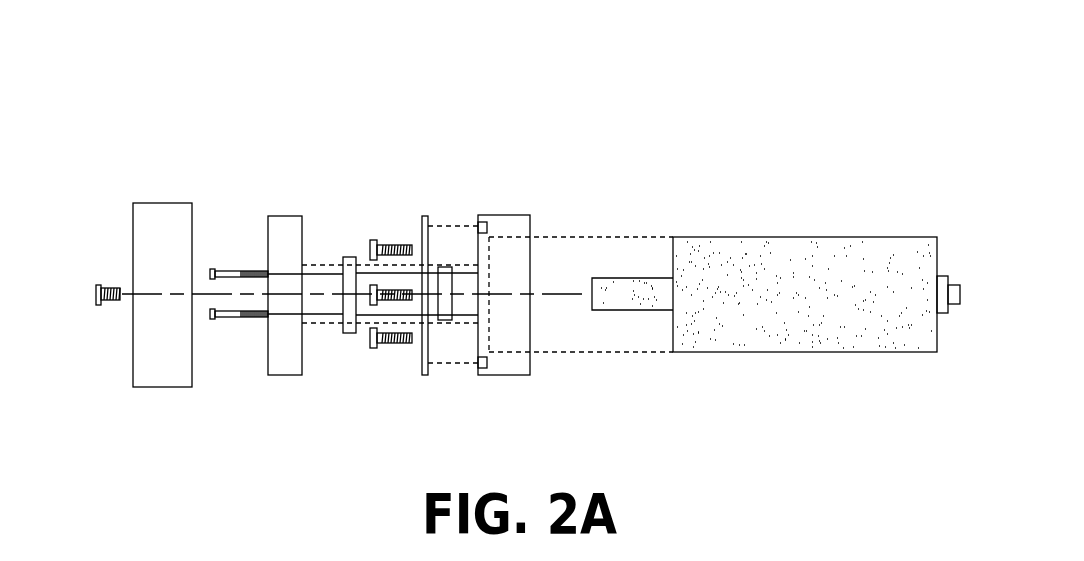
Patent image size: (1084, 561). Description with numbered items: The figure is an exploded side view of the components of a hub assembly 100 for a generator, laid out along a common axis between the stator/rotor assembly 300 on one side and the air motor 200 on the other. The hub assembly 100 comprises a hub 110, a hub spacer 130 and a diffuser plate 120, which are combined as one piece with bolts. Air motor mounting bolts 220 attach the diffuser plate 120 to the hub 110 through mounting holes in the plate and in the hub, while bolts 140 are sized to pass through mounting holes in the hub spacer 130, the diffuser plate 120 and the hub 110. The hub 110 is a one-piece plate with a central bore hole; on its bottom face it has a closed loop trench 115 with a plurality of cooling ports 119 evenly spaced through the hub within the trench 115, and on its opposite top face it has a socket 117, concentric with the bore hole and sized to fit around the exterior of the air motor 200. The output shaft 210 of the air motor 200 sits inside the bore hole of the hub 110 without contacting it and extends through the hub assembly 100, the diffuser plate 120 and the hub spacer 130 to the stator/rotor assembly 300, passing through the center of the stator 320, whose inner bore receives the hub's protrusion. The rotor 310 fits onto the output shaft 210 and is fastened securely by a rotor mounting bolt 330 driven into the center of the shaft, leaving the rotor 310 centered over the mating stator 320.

The hub assembly 100 is at (553, 90).
The hub 110 is at (503, 215).
The closed loop trench 115 is at (480, 227).
The socket 117 is at (532, 327).
The cooling ports 119 is at (530, 227).
The diffuser plate 120 is at (425, 216).
The hub spacer 130 is at (348, 257).
The bolts 140 is at (243, 318).
The air motor 200 is at (835, 180).
The output shaft 210 is at (617, 278).
The air motor mounting bolts 220 is at (392, 348).
The stator/rotor assembly 300 is at (302, 140).
The rotor 310 is at (162, 203).
The stator 320 is at (285, 216).
The rotor mounting bolt 330 is at (108, 305).